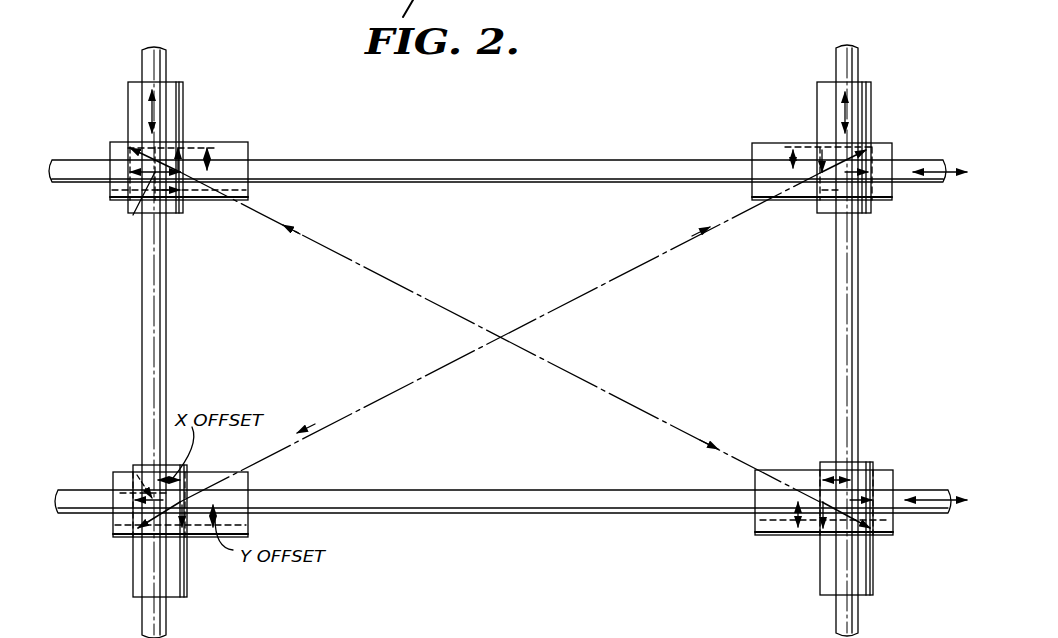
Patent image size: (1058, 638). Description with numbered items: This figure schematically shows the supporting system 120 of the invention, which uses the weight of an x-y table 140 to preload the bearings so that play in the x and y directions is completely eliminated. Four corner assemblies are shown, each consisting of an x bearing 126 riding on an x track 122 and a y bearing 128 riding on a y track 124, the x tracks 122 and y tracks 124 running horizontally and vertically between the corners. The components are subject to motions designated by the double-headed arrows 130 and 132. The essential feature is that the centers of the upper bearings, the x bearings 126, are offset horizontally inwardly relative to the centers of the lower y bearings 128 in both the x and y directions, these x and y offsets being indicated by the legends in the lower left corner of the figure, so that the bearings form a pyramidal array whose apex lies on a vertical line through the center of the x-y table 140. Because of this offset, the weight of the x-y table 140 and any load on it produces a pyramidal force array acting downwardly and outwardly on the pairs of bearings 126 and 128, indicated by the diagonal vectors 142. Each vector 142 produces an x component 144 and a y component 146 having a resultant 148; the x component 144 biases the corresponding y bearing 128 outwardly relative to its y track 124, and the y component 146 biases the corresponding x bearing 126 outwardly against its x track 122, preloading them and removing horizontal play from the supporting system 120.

The supporting system 120 is at (511, 140).
The x tracks 122 is at (430, 168).
The y tracks 124 is at (166, 290).
The x bearings 126 is at (240, 148).
The y bearings 128 is at (128, 100).
The double-headed arrow 130 is at (946, 178).
The double-headed arrow 132 is at (155, 112).
The x-y table 140 is at (862, 148).
The vectors 142 is at (395, 280).
The x component 144 is at (133, 212).
The y component 146 is at (185, 158).
The resultant 148 is at (148, 160).